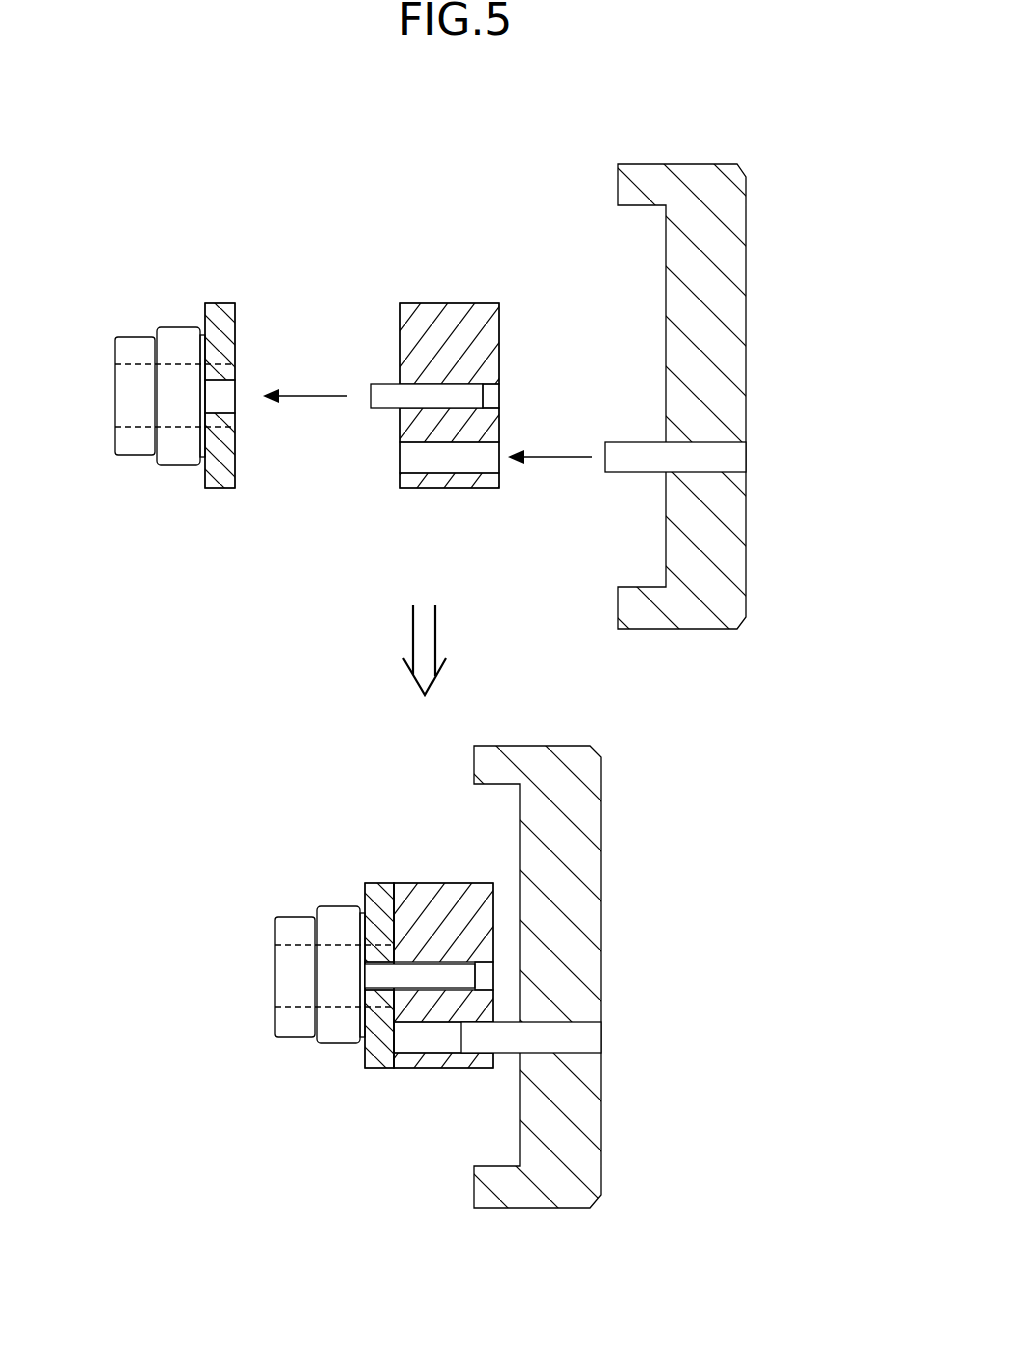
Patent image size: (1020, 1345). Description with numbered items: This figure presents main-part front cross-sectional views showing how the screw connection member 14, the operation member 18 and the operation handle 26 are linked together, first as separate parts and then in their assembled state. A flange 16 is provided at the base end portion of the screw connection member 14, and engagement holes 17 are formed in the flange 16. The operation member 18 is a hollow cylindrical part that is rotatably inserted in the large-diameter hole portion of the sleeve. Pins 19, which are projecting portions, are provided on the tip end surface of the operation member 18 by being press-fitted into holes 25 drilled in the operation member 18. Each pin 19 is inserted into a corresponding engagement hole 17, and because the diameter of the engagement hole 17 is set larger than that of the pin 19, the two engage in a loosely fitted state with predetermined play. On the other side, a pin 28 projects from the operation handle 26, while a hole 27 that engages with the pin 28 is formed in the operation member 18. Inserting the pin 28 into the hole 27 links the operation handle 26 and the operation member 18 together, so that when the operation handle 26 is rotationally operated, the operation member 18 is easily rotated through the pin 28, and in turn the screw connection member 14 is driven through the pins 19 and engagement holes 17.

The screw connection member 14 is at (141, 336).
The flange 16 is at (218, 303).
The engagement hole 17 is at (221, 395).
The operation member 18 is at (437, 303).
The pin 19 is at (380, 392).
The hole 25 is at (493, 395).
The operation handle 26 is at (682, 553).
The hole 27 is at (449, 464).
The pin 28 is at (618, 452).